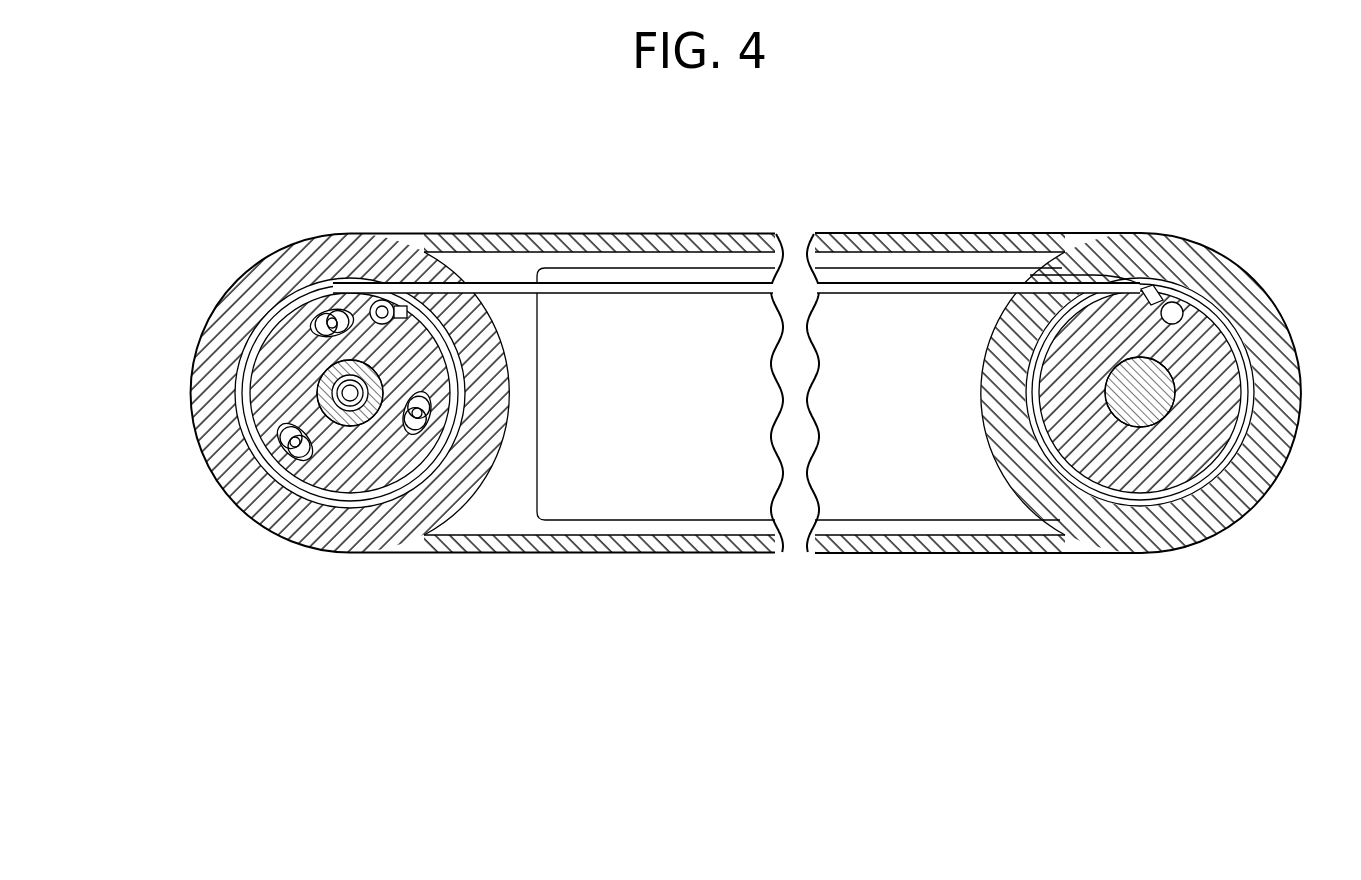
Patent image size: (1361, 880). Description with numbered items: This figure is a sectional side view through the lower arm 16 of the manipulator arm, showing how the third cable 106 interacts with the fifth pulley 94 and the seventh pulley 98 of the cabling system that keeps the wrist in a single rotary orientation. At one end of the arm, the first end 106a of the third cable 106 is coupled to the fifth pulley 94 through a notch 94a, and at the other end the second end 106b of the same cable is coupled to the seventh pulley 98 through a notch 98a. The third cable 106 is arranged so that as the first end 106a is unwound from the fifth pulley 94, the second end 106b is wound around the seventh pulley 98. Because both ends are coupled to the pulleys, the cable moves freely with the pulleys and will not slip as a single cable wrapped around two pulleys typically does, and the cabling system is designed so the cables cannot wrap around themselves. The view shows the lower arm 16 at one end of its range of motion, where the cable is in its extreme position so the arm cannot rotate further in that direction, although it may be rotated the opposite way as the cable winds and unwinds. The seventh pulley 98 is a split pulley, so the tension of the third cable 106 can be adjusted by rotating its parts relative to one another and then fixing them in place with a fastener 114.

The lower arm 16 is at (836, 233).
The fifth pulley 94 is at (1220, 365).
The notch 94a is at (1192, 325).
The seventh pulley 98 is at (275, 357).
The notch 98a is at (362, 302).
The third cable 106 is at (918, 283).
The first end 106a is at (1165, 300).
The second end 106b is at (388, 306).
The fastener 114 is at (331, 320).